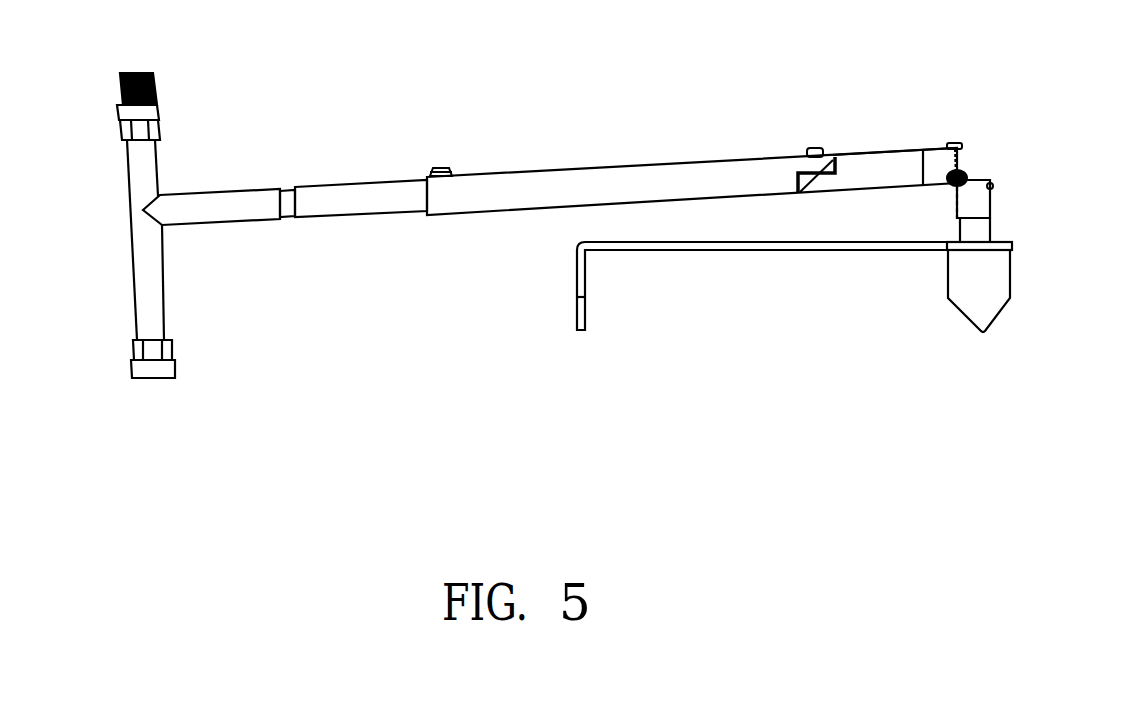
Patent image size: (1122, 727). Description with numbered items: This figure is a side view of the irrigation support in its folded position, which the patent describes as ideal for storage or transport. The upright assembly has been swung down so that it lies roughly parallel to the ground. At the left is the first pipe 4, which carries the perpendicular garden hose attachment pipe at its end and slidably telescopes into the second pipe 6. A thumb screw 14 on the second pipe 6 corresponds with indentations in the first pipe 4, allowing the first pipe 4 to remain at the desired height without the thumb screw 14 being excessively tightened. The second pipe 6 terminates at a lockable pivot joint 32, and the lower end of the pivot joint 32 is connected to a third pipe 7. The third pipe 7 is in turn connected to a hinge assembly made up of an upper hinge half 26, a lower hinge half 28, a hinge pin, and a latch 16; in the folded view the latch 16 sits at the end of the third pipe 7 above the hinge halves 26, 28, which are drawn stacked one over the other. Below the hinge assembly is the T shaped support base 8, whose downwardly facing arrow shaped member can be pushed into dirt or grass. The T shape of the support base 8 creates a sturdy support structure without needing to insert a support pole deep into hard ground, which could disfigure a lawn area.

The first pipe 4 is at (228, 187).
The second pipe 6 is at (755, 133).
The thumb screw 14 is at (437, 164).
The pivot joint 32 is at (792, 157).
The third pipe 7 is at (938, 112).
The latch 16 is at (962, 138).
The upper hinge half 26 is at (966, 168).
The lower hinge half 28 is at (985, 178).
The T shaped support base 8 is at (534, 248).